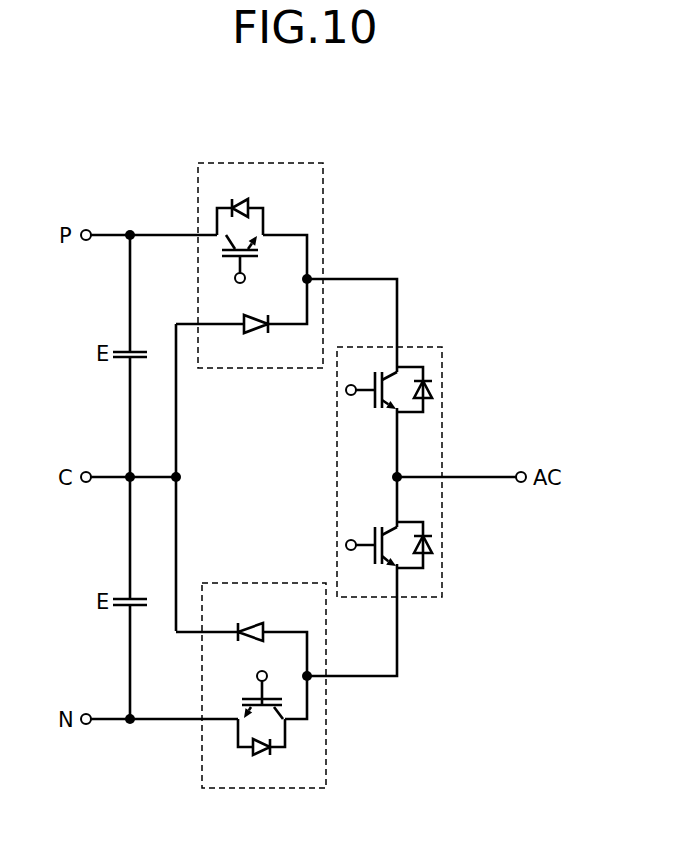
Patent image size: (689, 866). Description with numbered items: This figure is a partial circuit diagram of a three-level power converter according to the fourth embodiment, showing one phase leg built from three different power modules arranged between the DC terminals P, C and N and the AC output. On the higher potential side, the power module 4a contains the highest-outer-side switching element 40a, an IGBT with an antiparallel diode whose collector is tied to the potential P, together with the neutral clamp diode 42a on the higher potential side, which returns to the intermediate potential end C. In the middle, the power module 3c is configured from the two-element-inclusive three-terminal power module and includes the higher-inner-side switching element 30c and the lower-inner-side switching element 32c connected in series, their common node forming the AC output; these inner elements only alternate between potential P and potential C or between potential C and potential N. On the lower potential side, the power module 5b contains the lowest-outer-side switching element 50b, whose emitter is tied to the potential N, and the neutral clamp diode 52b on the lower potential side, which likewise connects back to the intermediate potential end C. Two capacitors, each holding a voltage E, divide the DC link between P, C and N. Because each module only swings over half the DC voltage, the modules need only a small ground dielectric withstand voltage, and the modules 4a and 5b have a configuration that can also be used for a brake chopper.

The power module 4a is at (254, 163).
The highest-outer-side switching element 40a is at (282, 217).
The neutral clamp diode 42a is at (255, 349).
The power module 3c is at (425, 347).
The higher-inner-side switching element 30c is at (427, 427).
The lower-inner-side switching element 32c is at (426, 582).
The neutral clamp diode 52b is at (251, 602).
The power module 5b is at (252, 790).
The lowest-outer-side switching element 50b is at (288, 762).